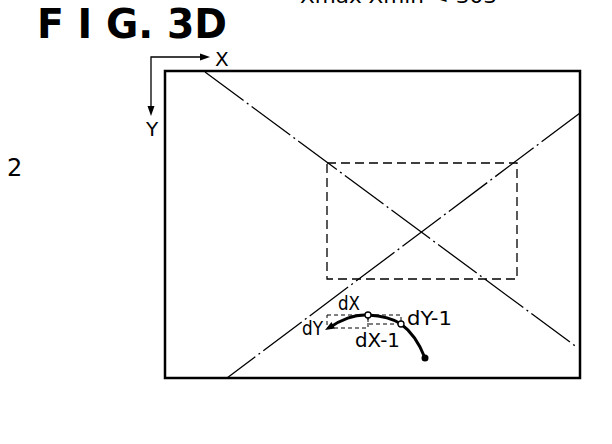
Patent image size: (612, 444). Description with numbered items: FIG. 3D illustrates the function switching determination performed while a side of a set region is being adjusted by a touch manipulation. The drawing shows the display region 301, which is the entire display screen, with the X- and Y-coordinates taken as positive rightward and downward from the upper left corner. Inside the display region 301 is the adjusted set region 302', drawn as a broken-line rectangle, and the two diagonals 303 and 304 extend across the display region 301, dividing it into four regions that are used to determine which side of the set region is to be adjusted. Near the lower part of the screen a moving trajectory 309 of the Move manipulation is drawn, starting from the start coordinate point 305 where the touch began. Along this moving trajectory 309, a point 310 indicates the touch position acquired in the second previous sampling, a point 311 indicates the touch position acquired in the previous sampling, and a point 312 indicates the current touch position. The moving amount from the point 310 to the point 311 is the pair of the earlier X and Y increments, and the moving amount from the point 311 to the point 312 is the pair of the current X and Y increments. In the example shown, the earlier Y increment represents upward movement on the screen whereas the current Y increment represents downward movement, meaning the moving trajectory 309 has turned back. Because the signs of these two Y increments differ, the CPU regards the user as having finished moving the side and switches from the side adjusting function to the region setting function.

The display region 301 is at (561, 58).
The adjusted set region 302' is at (422, 196).
The diagonal 303 is at (533, 150).
The diagonal 304 is at (313, 151).
The start coordinate point 305 is at (428, 360).
The moving trajectory 309 is at (413, 337).
The point 310 is at (400, 328).
The point 311 is at (369, 313).
The point 312 is at (327, 333).